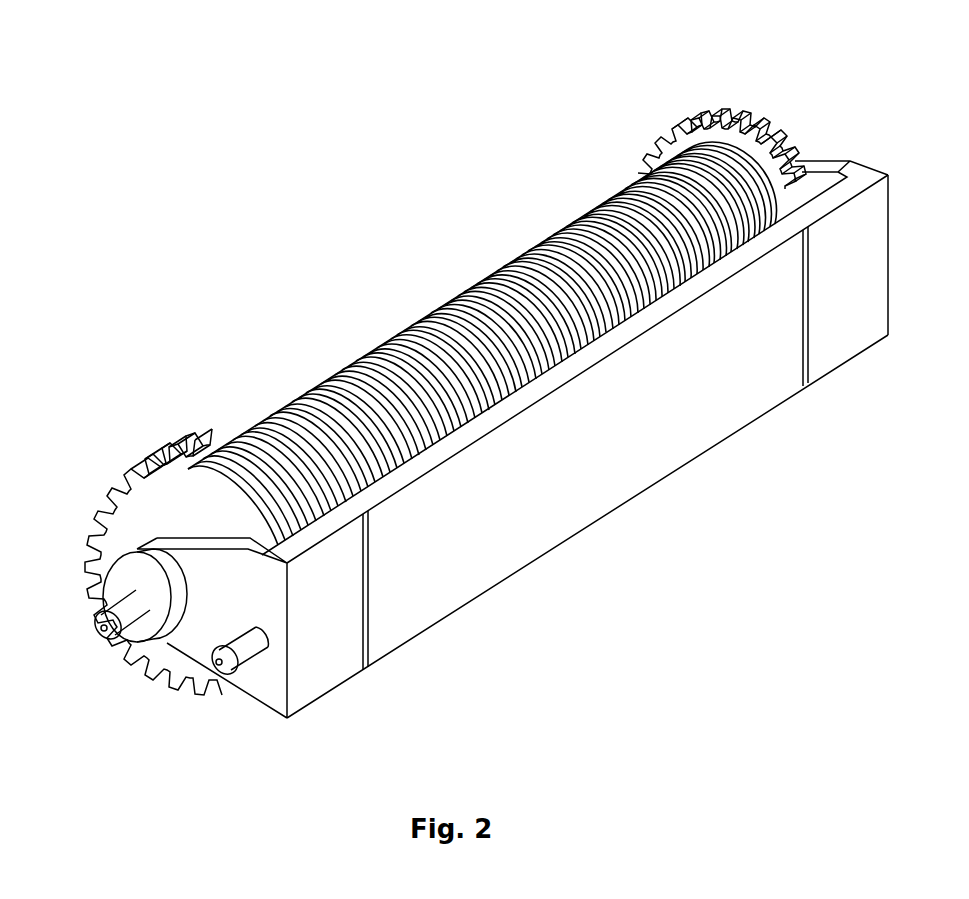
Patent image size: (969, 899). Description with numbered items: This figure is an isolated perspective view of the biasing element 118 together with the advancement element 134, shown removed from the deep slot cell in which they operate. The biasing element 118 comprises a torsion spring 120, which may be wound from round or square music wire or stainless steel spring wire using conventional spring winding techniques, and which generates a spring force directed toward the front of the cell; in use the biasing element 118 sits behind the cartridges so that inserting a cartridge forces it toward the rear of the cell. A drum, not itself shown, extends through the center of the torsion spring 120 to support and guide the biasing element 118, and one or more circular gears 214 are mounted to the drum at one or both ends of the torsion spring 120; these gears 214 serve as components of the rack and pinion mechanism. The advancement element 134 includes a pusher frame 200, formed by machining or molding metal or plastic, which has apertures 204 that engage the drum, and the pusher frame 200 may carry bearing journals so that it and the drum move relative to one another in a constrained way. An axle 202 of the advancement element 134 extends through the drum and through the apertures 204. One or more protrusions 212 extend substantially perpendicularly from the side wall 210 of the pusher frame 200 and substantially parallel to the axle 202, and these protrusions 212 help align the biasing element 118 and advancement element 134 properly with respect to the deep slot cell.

The biasing element 118 is at (306, 84).
The torsion spring 120 is at (425, 306).
The advancement element 134 is at (625, 547).
The pusher frame 200 is at (604, 449).
The axle 202 is at (113, 620).
The apertures 204 is at (135, 556).
The side wall 210 is at (197, 640).
The protrusions 212 is at (243, 645).
The circular gears 214 is at (740, 122).